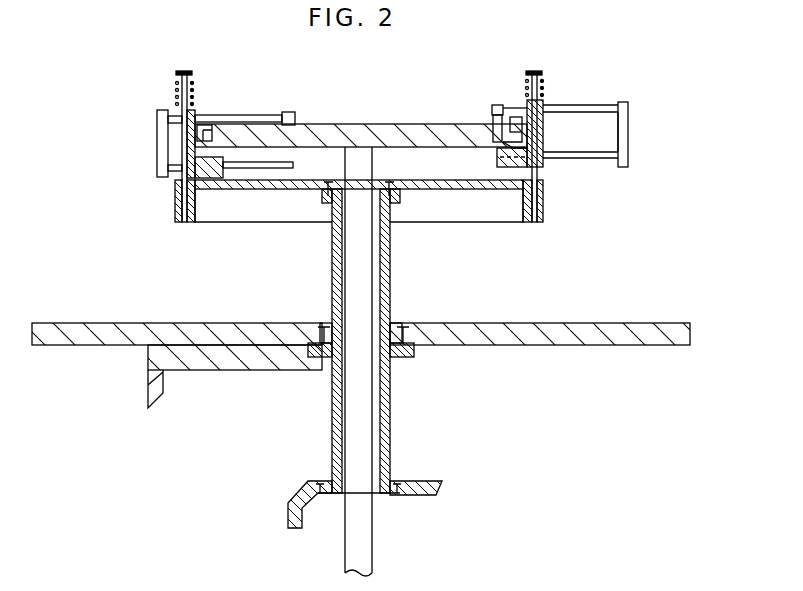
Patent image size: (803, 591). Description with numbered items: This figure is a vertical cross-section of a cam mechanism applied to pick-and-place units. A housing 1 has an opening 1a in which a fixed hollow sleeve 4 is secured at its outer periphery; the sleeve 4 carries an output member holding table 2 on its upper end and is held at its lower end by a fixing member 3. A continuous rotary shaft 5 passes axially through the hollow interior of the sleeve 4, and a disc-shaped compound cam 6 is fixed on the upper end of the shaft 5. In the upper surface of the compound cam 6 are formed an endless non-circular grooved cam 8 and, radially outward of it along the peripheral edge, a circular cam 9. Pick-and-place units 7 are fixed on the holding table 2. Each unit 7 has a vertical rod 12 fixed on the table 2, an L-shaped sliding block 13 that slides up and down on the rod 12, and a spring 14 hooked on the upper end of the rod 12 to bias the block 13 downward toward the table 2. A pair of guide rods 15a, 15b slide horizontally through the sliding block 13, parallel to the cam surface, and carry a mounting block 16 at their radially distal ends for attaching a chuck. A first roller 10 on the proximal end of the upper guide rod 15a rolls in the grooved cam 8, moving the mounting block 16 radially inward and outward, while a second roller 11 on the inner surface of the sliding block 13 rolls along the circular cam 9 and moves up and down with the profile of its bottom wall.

The housing 1 is at (237, 358).
The opening 1a is at (398, 326).
The output member holding table 2 is at (543, 200).
The fixing member 3 is at (442, 490).
The fixed hollow sleeve 4 is at (388, 498).
The continuous rotary shaft 5 is at (368, 560).
The compound cam 6 is at (372, 132).
The pick-and-place unit 7 is at (150, 130).
The grooved cam 8 is at (300, 142).
The circular cam 9 is at (258, 133).
The first roller 10 is at (498, 112).
The second roller 11 is at (515, 118).
The vertical rod 12 is at (537, 173).
The L-shaped sliding block 13 is at (187, 183).
The spring 14 is at (541, 80).
The upper guide rod 15a is at (588, 106).
The lower guide rod 15b is at (595, 153).
The mounting block 16 is at (626, 140).